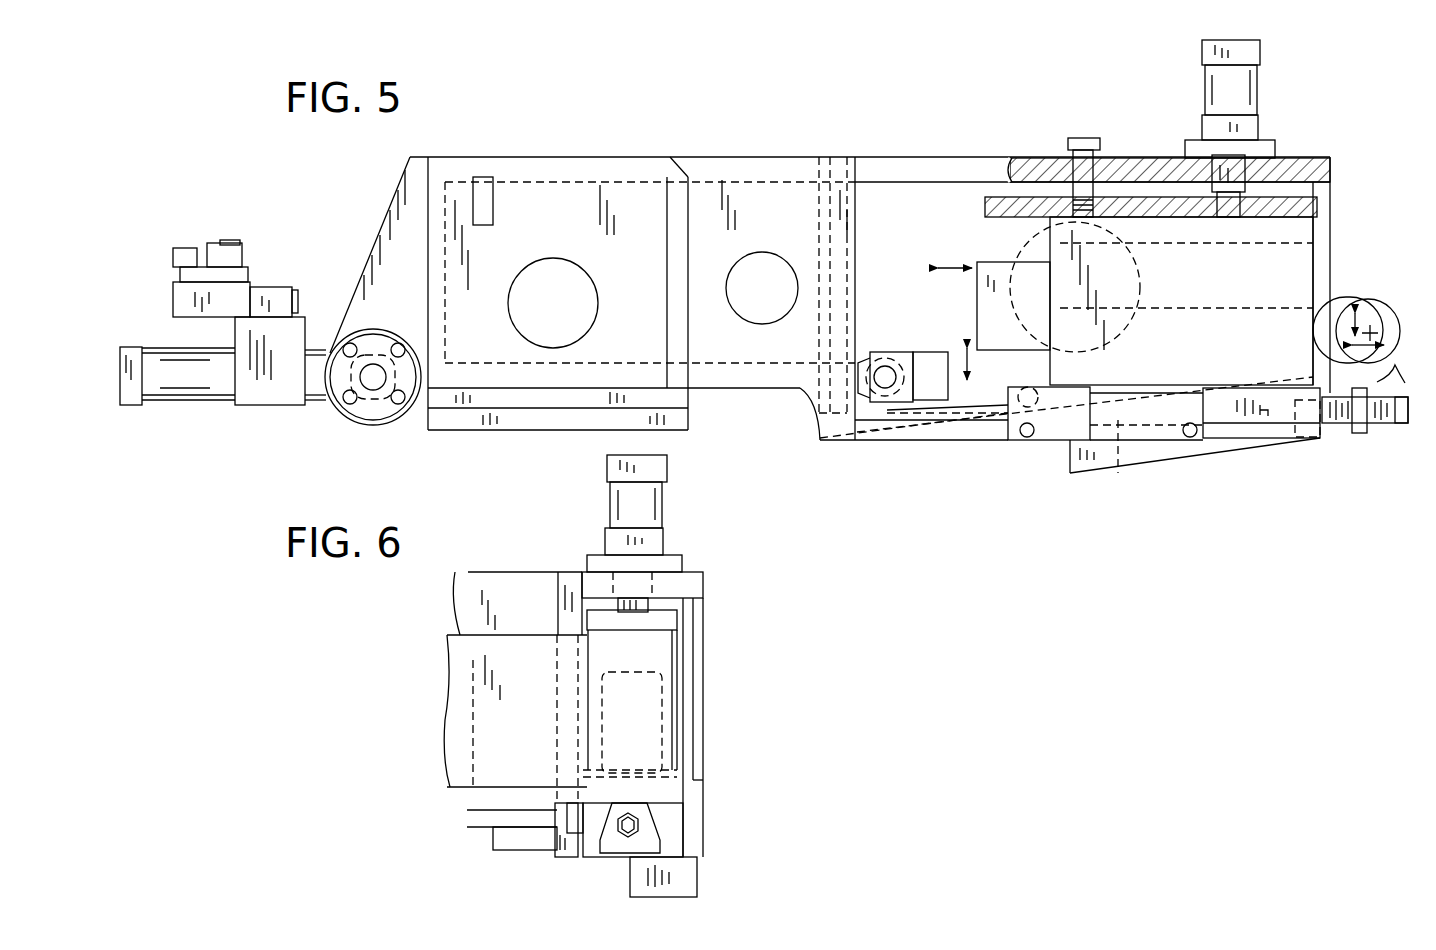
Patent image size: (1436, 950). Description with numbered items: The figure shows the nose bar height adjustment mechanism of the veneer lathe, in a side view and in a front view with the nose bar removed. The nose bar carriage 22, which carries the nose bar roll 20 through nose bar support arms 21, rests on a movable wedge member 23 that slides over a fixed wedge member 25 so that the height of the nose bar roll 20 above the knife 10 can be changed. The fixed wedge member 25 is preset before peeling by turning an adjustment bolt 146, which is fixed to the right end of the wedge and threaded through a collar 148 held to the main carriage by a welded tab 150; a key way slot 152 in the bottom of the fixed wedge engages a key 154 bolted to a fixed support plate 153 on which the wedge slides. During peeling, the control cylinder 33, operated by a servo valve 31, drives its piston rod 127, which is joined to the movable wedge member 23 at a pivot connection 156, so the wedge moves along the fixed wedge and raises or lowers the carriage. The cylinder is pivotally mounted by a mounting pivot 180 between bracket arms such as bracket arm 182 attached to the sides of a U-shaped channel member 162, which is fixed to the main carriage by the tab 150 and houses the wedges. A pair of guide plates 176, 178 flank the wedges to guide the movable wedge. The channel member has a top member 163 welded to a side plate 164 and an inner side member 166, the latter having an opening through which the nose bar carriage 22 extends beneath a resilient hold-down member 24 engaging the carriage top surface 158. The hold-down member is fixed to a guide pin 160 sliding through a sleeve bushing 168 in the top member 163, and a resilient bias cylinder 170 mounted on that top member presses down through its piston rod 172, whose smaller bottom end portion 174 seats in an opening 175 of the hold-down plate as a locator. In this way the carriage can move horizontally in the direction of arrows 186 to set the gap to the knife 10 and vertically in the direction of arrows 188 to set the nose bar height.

In FIG. 5, the knife 10 is at (1400, 358).
In FIG. 5, the nose bar roll 20 is at (1375, 310).
In FIG. 5, the nose bar support arms 21 is at (1340, 300).
In FIG. 5, the nose bar carriage 22 is at (1310, 232).
In FIG. 6, the nose bar carriage 22 is at (455, 600).
In FIG. 5, the movable wedge member 23 is at (948, 385).
In FIG. 6, the movable wedge member 23 is at (612, 805).
In FIG. 5, the resilient hold-down member 24 is at (1128, 213).
In FIG. 6, the resilient hold-down member 24 is at (668, 622).
In FIG. 5, the fixed wedge member 25 is at (975, 408).
In FIG. 6, the fixed wedge member 25 is at (595, 803).
In FIG. 5, the servo valve 31 is at (245, 292).
In FIG. 5, the control cylinder 33 is at (180, 392).
In FIG. 5, the piston rod 127 is at (645, 363).
In FIG. 5, the adjustment bolt 146 is at (1386, 425).
In FIG. 6, the adjustment bolt 146 is at (632, 815).
In FIG. 5, the collar 148 is at (1358, 433).
In FIG. 6, the collar 148 is at (650, 827).
In FIG. 5, the tab 150 is at (1170, 455).
In FIG. 5, the key way slot 152 is at (1012, 440).
In FIG. 6, the key way slot 152 is at (615, 860).
In FIG. 5, the fixed support plate 153 is at (1246, 442).
In FIG. 6, the fixed support plate 153 is at (672, 858).
In FIG. 5, the key 154 is at (1118, 452).
In FIG. 5, the pivot connection 156 is at (885, 375).
In FIG. 5, the top surface 158 is at (1150, 225).
In FIG. 5, the guide pin 160 is at (1083, 195).
In FIG. 5, the U-shaped channel member 162 is at (833, 155).
In FIG. 6, the U-shaped channel member 162 is at (706, 689).
In FIG. 5, the top member 163 is at (985, 185).
In FIG. 6, the top member 163 is at (695, 588).
In FIG. 6, the side plate 164 is at (700, 650).
In FIG. 6, the inner side member 166 is at (548, 585).
In FIG. 5, the sleeve bushing 168 is at (1068, 165).
In FIG. 5, the resilient bias cylinder 170 is at (1257, 85).
In FIG. 6, the resilient bias cylinder 170 is at (660, 502).
In FIG. 5, the piston rod 172 is at (1240, 175).
In FIG. 6, the piston rod 172 is at (620, 605).
In FIG. 5, the bottom end portion 174 is at (1218, 220).
In FIG. 6, the bottom end portion 174 is at (632, 630).
In FIG. 5, the opening 175 is at (1228, 220).
In FIG. 5, the guide plate 176 is at (1208, 405).
In FIG. 6, the guide plate 176 is at (568, 820).
In FIG. 6, the guide plate 178 is at (688, 810).
In FIG. 5, the mounting pivot 180 is at (375, 375).
In FIG. 5, the bracket arm 182 is at (388, 218).
In FIG. 5, the arrows 186 is at (955, 265).
In FIG. 5, the arrows 188 is at (975, 365).